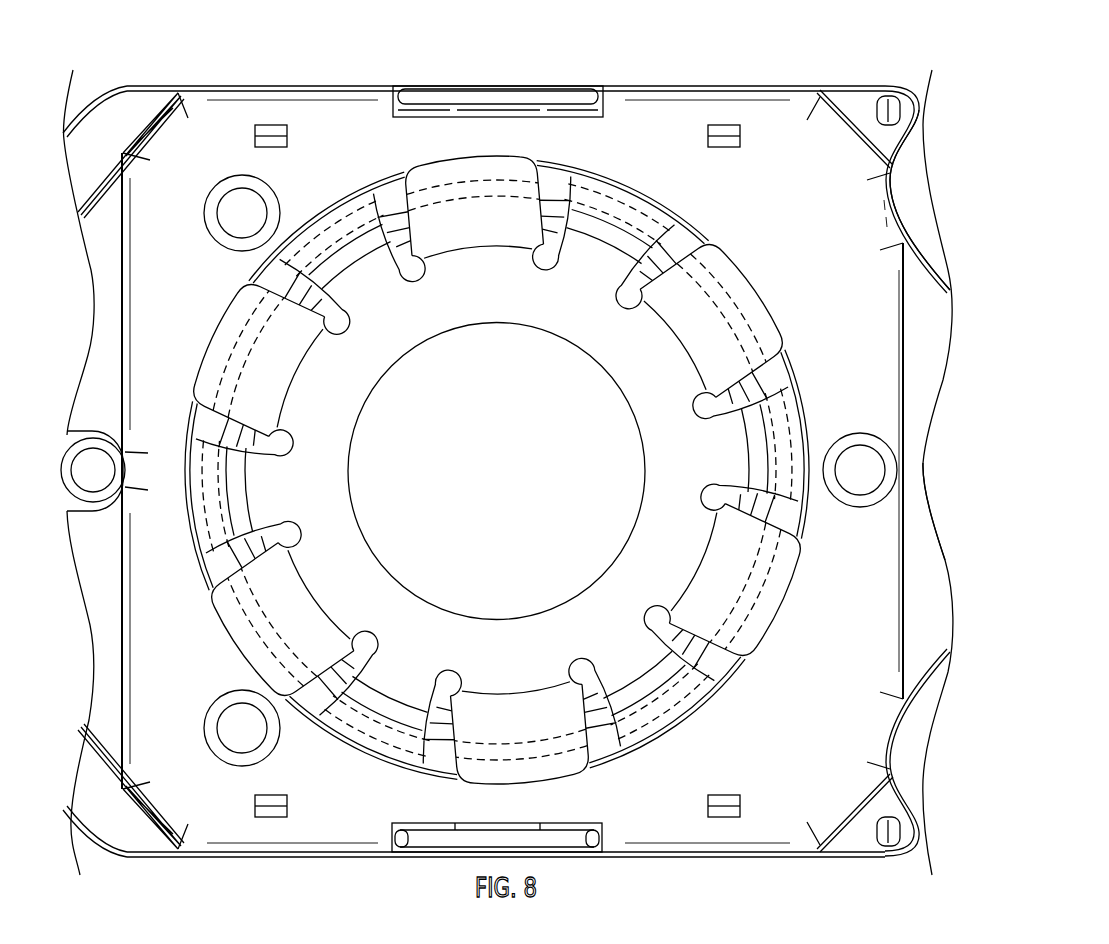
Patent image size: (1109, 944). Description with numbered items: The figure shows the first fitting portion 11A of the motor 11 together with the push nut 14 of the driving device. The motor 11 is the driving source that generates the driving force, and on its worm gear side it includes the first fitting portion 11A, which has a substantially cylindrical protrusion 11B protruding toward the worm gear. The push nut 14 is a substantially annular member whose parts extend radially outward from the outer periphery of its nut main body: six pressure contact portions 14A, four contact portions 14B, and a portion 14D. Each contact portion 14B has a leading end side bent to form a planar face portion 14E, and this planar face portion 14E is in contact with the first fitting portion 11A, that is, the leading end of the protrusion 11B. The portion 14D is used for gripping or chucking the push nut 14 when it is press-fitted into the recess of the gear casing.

The motor 11 is at (797, 82).
The first fitting portion 11A is at (795, 375).
The protrusion 11B is at (805, 520).
The push nut 14 is at (505, 152).
The pressure contact portion 14A is at (467, 157).
The contact portion 14B is at (327, 210).
The portion 14D is at (800, 416).
The planar face portion 14E is at (343, 204).